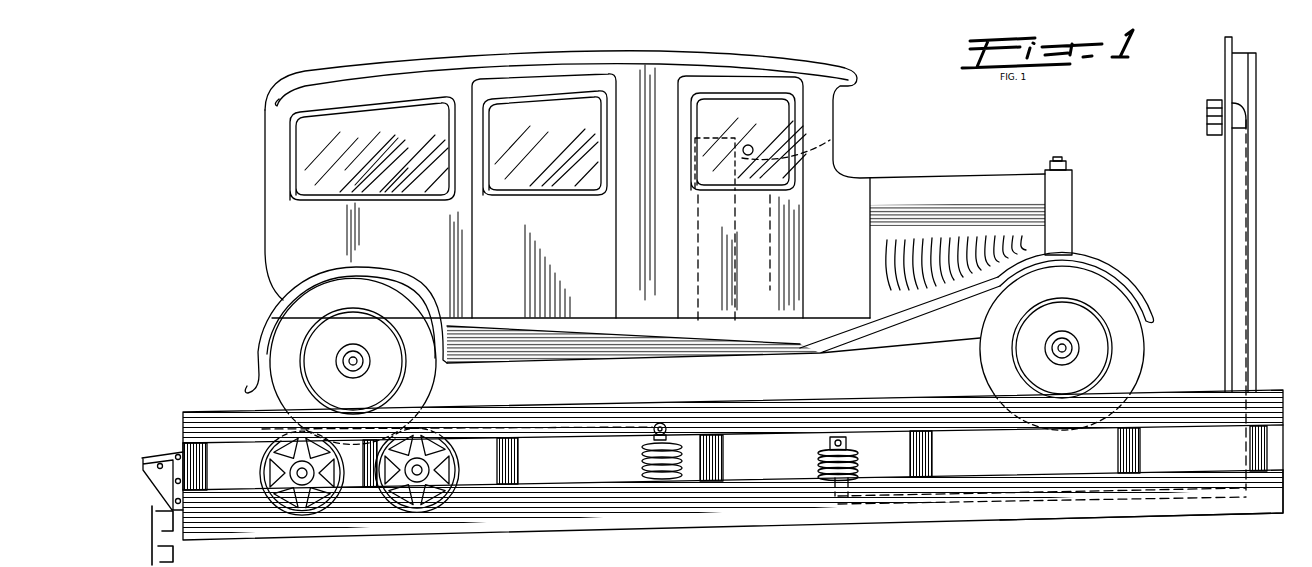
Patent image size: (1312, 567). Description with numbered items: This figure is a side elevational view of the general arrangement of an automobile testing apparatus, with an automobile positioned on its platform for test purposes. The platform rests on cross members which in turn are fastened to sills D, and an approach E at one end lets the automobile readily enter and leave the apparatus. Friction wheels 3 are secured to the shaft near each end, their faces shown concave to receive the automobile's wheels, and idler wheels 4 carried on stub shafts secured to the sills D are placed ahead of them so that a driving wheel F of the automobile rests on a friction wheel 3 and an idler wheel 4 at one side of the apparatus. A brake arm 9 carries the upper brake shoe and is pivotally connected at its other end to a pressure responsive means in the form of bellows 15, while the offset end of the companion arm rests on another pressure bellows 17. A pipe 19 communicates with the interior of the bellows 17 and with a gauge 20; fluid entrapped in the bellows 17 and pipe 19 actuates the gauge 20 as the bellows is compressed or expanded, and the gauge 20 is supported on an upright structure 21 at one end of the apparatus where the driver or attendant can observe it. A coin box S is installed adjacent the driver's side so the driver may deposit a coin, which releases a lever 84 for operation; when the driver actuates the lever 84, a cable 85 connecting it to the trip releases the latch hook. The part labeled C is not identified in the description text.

The friction wheels 3 is at (307, 508).
The idler wheels 4 is at (418, 506).
The brake arm 9 is at (632, 412).
The bellows 15 is at (642, 462).
The pressure bellows 17 is at (880, 462).
The pipe 19 is at (1002, 490).
The gauge 20 is at (1220, 100).
The upright structure 21 is at (1257, 82).
The lever 84 is at (830, 140).
The cable 85 is at (770, 262).
The coin box S is at (728, 148).
The driving wheel F is at (293, 317).
The approach E is at (172, 455).
The carrier frame C is at (1132, 462).
The sills D is at (1263, 503).